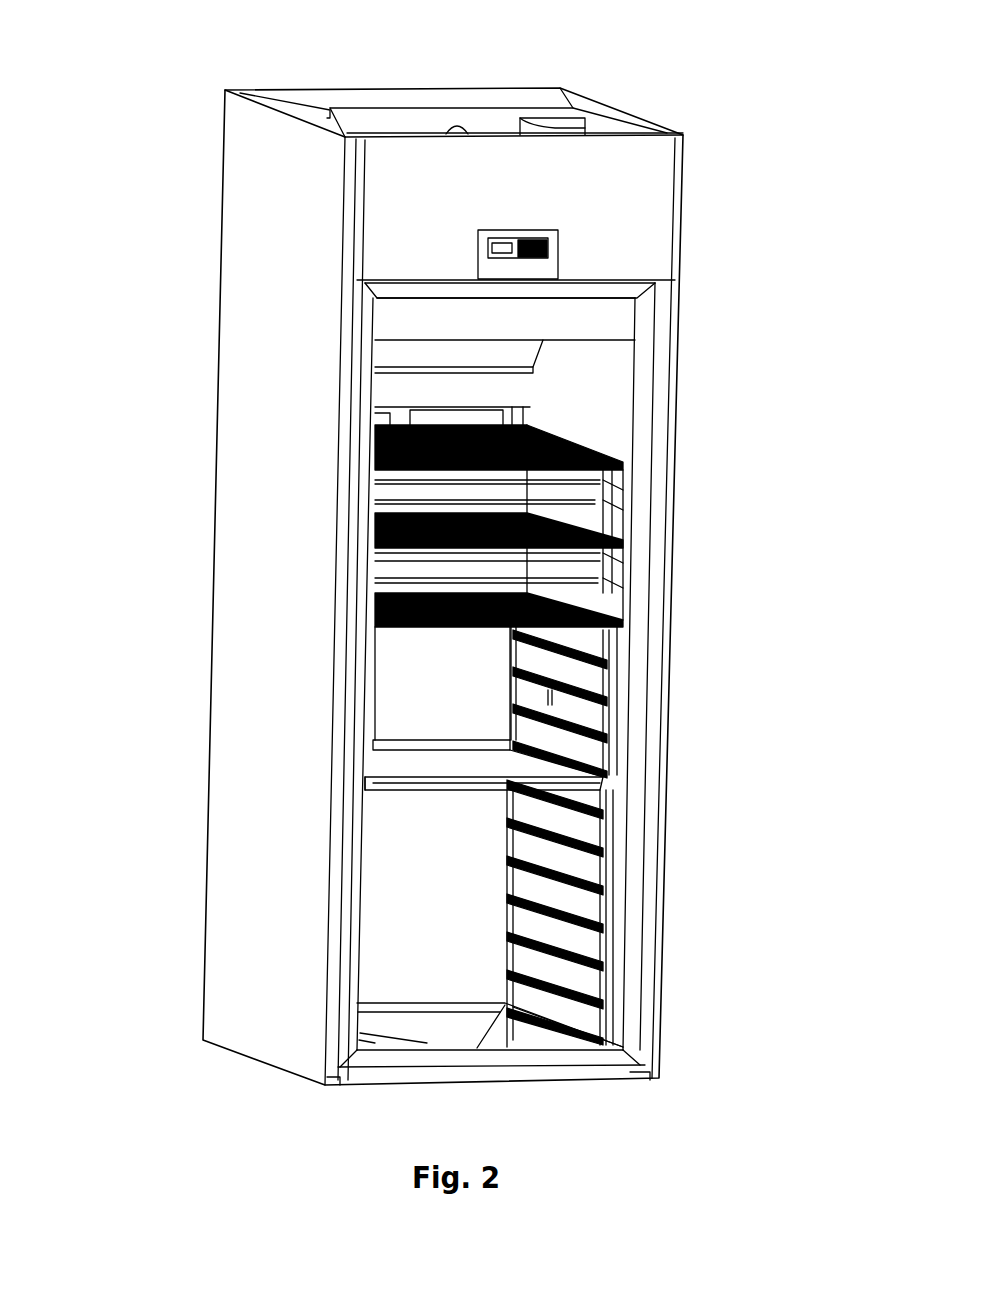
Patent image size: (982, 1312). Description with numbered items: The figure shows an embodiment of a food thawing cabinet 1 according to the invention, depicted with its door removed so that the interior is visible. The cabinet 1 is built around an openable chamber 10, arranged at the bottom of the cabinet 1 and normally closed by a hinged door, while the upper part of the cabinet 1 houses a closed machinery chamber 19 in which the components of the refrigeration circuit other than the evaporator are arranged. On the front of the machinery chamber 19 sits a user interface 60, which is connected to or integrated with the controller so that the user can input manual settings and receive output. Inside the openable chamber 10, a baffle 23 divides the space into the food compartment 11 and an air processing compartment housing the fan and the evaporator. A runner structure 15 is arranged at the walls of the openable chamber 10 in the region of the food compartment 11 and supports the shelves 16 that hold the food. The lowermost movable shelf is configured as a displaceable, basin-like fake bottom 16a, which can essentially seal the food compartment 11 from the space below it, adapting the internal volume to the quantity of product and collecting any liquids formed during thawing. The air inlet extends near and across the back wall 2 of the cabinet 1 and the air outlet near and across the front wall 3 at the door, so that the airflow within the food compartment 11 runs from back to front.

The food thawing cabinet 1 is at (170, 119).
The machinery chamber 19 is at (712, 179).
The user interface 60 is at (558, 246).
The front wall 3 is at (646, 326).
The baffle 23 is at (515, 388).
The shelves 16 is at (473, 470).
The openable chamber 10 is at (397, 678).
The food compartment 11 is at (560, 664).
The runner structure 15 is at (556, 688).
The fake bottom 16a is at (452, 790).
The back wall 2 is at (428, 908).